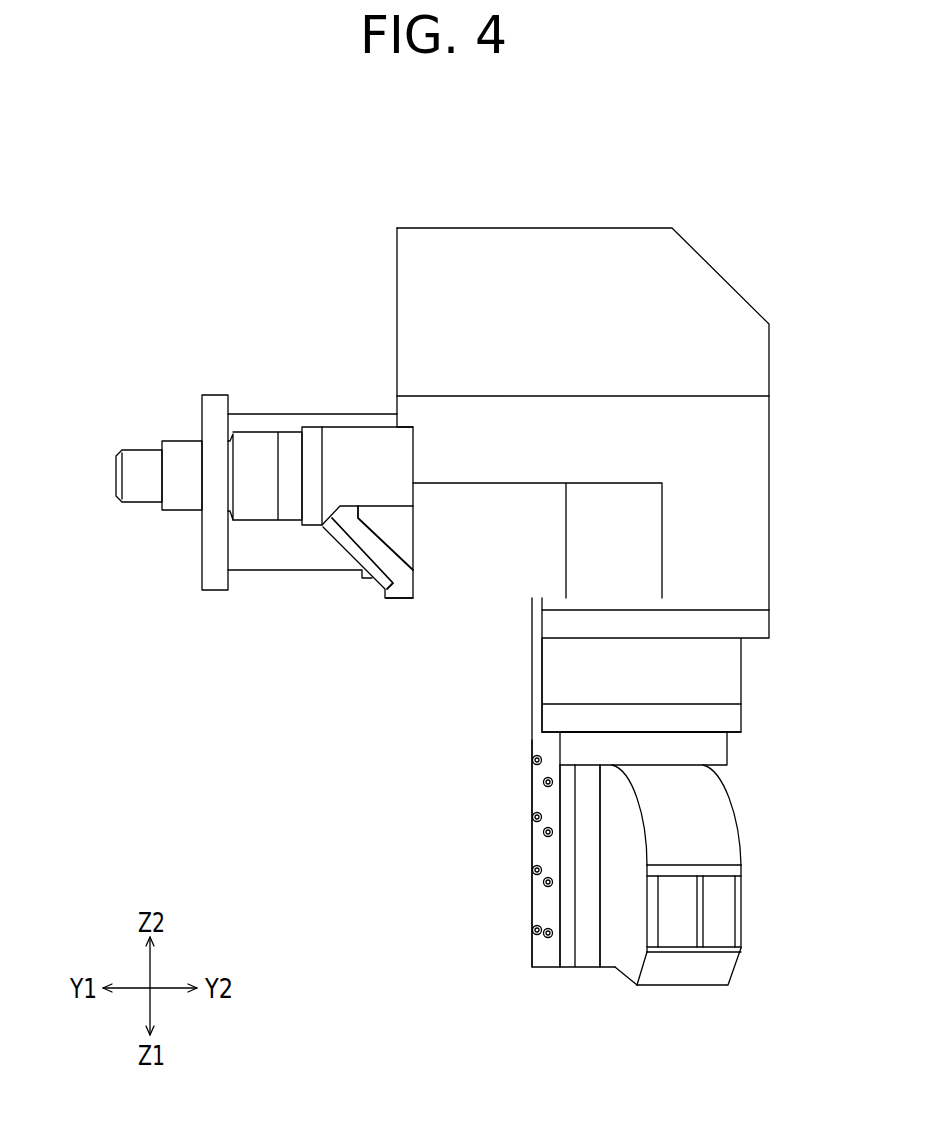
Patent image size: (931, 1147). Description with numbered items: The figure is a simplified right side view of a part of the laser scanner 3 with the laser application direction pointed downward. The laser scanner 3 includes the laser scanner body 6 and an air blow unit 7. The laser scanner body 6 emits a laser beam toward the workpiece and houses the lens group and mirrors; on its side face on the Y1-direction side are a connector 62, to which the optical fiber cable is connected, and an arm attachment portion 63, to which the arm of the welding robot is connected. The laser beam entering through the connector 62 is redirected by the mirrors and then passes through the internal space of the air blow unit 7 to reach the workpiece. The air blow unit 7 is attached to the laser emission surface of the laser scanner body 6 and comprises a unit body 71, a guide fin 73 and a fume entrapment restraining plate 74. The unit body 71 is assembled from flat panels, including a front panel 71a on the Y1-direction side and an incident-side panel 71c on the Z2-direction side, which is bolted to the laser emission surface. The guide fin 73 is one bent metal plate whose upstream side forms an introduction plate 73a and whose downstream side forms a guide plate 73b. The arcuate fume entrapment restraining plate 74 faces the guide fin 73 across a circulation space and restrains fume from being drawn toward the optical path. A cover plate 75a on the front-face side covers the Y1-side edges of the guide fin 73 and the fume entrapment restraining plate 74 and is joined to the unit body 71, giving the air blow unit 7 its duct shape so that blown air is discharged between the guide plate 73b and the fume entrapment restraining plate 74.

The laser scanner 3 is at (163, 148).
The laser scanner body 6 is at (510, 220).
The connector 62 is at (132, 443).
The arm attachment portion 63 is at (202, 562).
The air blow unit 7 is at (635, 838).
The unit body 71 is at (592, 956).
The front panel 71a is at (542, 908).
The incident-side panel 71c is at (707, 748).
The guide fin 73 is at (712, 980).
The introduction plate 73a is at (625, 980).
The guide plate 73b is at (677, 973).
The fume entrapment restraining plate 74 is at (706, 823).
The cover plate 75a is at (620, 857).